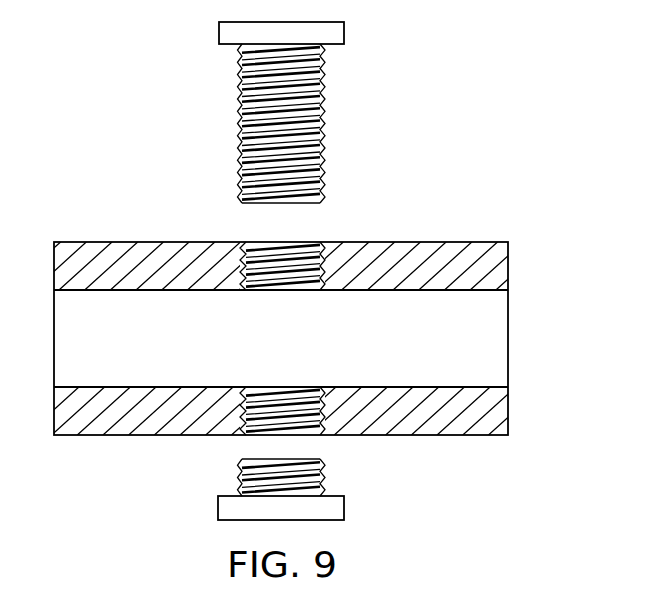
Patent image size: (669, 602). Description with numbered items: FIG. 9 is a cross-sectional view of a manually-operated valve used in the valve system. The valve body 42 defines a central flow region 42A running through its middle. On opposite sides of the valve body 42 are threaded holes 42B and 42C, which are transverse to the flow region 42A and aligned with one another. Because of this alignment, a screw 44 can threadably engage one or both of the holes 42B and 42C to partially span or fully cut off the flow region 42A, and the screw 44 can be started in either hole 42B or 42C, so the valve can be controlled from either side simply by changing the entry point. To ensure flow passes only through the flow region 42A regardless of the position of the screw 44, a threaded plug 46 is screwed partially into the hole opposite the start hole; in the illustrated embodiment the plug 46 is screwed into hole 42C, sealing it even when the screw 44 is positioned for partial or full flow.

The valve body 42 is at (102, 247).
The central flow region 42A is at (194, 349).
The threaded hole 42B is at (247, 247).
The threaded hole 42C is at (252, 427).
The screw 44 is at (324, 125).
The threaded plug 46 is at (325, 470).